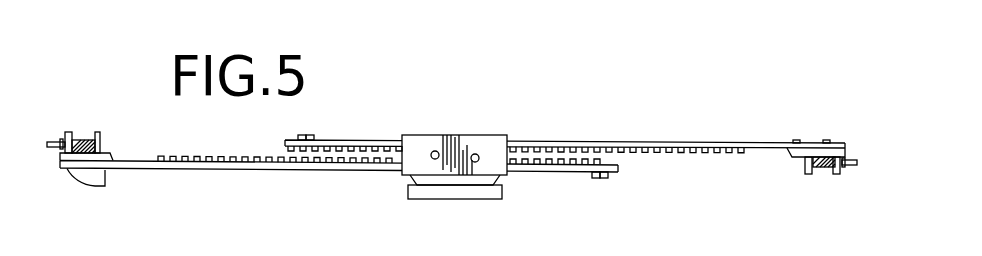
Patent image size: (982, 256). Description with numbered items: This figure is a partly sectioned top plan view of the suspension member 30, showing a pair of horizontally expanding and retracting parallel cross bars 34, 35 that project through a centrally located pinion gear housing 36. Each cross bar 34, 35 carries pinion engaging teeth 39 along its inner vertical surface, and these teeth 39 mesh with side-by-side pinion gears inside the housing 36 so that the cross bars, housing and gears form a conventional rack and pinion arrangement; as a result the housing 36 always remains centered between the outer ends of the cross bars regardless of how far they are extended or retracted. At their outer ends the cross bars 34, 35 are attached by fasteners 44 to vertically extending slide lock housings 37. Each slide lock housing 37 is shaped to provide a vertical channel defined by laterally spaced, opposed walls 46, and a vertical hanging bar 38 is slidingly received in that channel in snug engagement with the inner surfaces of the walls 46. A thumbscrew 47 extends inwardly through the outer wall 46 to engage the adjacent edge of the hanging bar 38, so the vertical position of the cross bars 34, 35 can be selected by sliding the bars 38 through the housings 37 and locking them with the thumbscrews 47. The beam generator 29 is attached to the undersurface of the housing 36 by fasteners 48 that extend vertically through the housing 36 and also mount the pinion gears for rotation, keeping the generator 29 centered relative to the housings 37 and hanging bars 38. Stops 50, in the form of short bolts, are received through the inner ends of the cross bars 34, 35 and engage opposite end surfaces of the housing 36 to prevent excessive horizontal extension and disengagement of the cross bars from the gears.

The beam generator 29 is at (462, 193).
The drive assembly 30 is at (753, 103).
The cross bar 34 is at (276, 172).
The cross bar 35 is at (670, 140).
The pinion gear housing 36 is at (455, 135).
The slide lock housing 37 is at (111, 152).
The vertical hanging bar 38 is at (84, 140).
The pinion engaging teeth 39 is at (235, 156).
The fasteners 44 is at (104, 187).
The walls 46 is at (68, 132).
The thumbscrew 47 is at (57, 142).
The fasteners 48 is at (435, 151).
The stops 50 is at (310, 135).